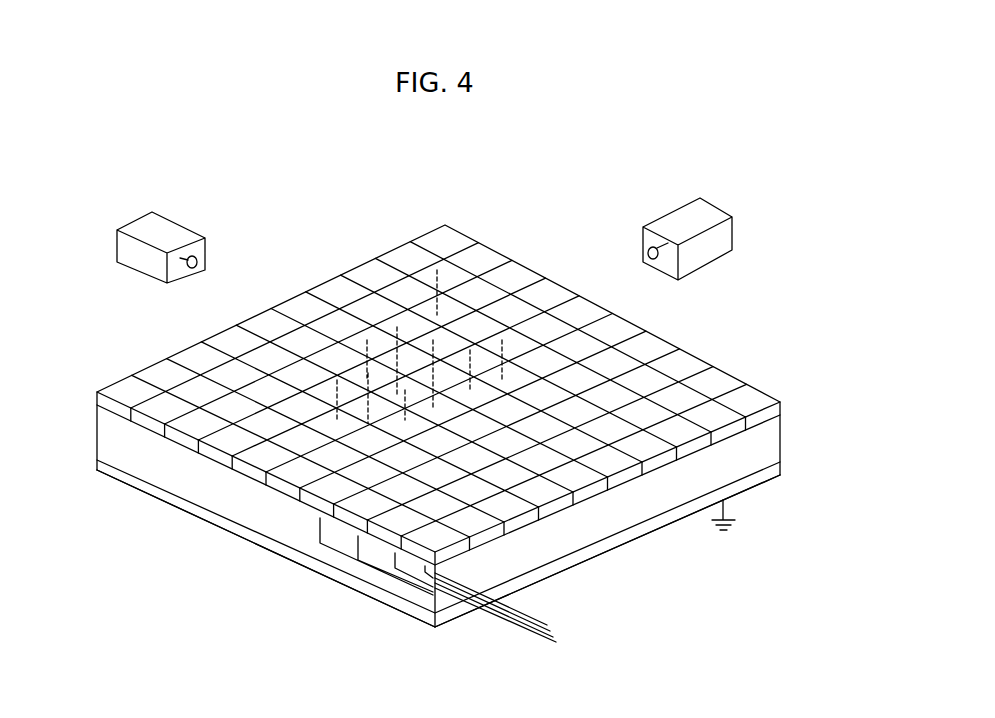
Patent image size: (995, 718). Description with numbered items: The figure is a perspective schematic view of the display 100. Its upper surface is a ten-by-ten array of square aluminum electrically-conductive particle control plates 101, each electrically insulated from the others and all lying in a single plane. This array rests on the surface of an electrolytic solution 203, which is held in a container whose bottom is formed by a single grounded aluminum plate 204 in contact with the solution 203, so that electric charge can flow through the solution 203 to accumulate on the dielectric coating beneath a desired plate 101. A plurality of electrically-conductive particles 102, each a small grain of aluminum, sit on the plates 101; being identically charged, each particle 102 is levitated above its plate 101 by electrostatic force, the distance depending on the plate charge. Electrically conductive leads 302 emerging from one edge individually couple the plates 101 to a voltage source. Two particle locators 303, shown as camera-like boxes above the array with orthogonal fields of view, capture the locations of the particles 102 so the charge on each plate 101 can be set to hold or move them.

The display 100 is at (372, 692).
The electrically-conductive particle control plate 101 is at (97, 398).
The electrically-conductive particle 102 is at (436, 268).
The electrolytic solution 203 is at (770, 443).
The aluminum plate 204 is at (97, 470).
The electrically conductive lead 302 is at (500, 625).
The particle locator 303 is at (167, 222).